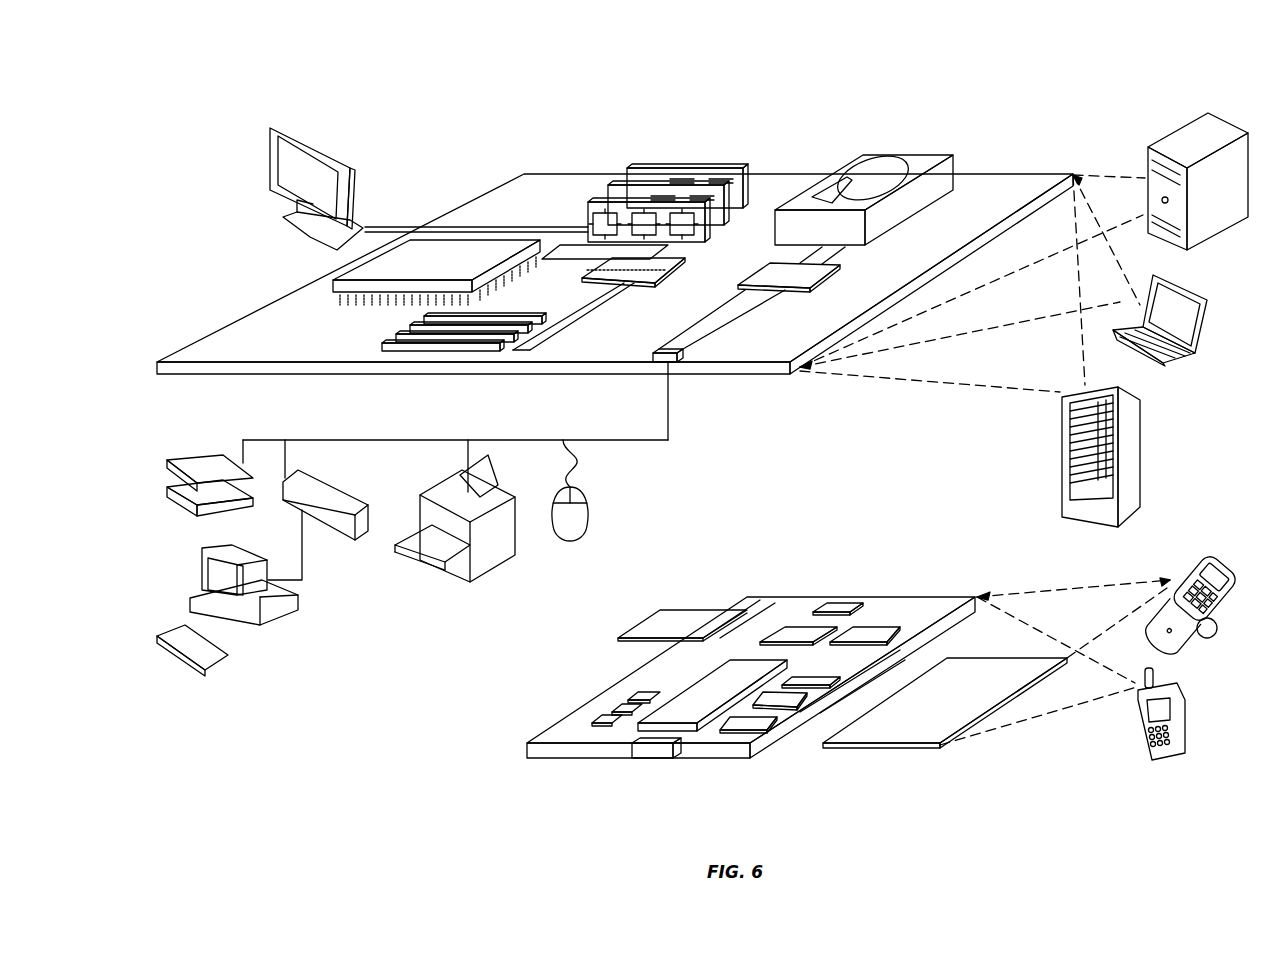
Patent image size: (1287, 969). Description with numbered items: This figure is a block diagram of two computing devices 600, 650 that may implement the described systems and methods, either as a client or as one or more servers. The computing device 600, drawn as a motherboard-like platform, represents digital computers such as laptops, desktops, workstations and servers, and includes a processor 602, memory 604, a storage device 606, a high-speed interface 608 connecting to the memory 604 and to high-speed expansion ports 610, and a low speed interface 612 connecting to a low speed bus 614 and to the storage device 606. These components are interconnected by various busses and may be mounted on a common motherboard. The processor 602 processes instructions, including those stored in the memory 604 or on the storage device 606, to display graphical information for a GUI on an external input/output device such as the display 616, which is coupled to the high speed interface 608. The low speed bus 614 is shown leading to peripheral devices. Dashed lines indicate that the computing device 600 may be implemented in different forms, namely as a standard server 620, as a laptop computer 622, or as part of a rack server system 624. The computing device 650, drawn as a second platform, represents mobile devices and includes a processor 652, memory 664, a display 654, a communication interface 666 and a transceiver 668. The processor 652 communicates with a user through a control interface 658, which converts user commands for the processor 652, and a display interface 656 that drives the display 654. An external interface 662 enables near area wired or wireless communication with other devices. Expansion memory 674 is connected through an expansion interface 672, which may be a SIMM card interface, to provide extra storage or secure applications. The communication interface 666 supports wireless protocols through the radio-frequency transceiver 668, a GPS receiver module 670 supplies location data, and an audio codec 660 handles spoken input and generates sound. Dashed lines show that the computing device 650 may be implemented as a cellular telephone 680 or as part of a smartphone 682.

The computing device 600 is at (452, 148).
The processor 602 is at (333, 285).
The memory 604 is at (643, 168).
The storage device 606 is at (851, 155).
The high-speed interface 608 is at (613, 268).
The high-speed expansion ports 610 is at (383, 338).
The low speed interface 612 is at (773, 267).
The low speed bus 614 is at (678, 362).
The display 616 is at (272, 127).
The standard server 620 is at (1147, 163).
The laptop computer 622 is at (1213, 296).
The rack server system 624 is at (1062, 488).
The computing device 650 is at (504, 763).
The processor 652 is at (692, 723).
The display 654 is at (907, 733).
The display interface 656 is at (755, 727).
The control interface 658 is at (783, 703).
The audio codec 660 is at (807, 685).
The external interface 662 is at (660, 745).
The memory 664 is at (612, 710).
The communication interface 666 is at (798, 632).
The transceiver 668 is at (870, 630).
The GPS receiver module 670 is at (847, 607).
The expansion interface 672 is at (733, 610).
The expansion memory 674 is at (660, 610).
The cellular telephone 680 is at (1192, 558).
The smartphone 682 is at (1142, 725).